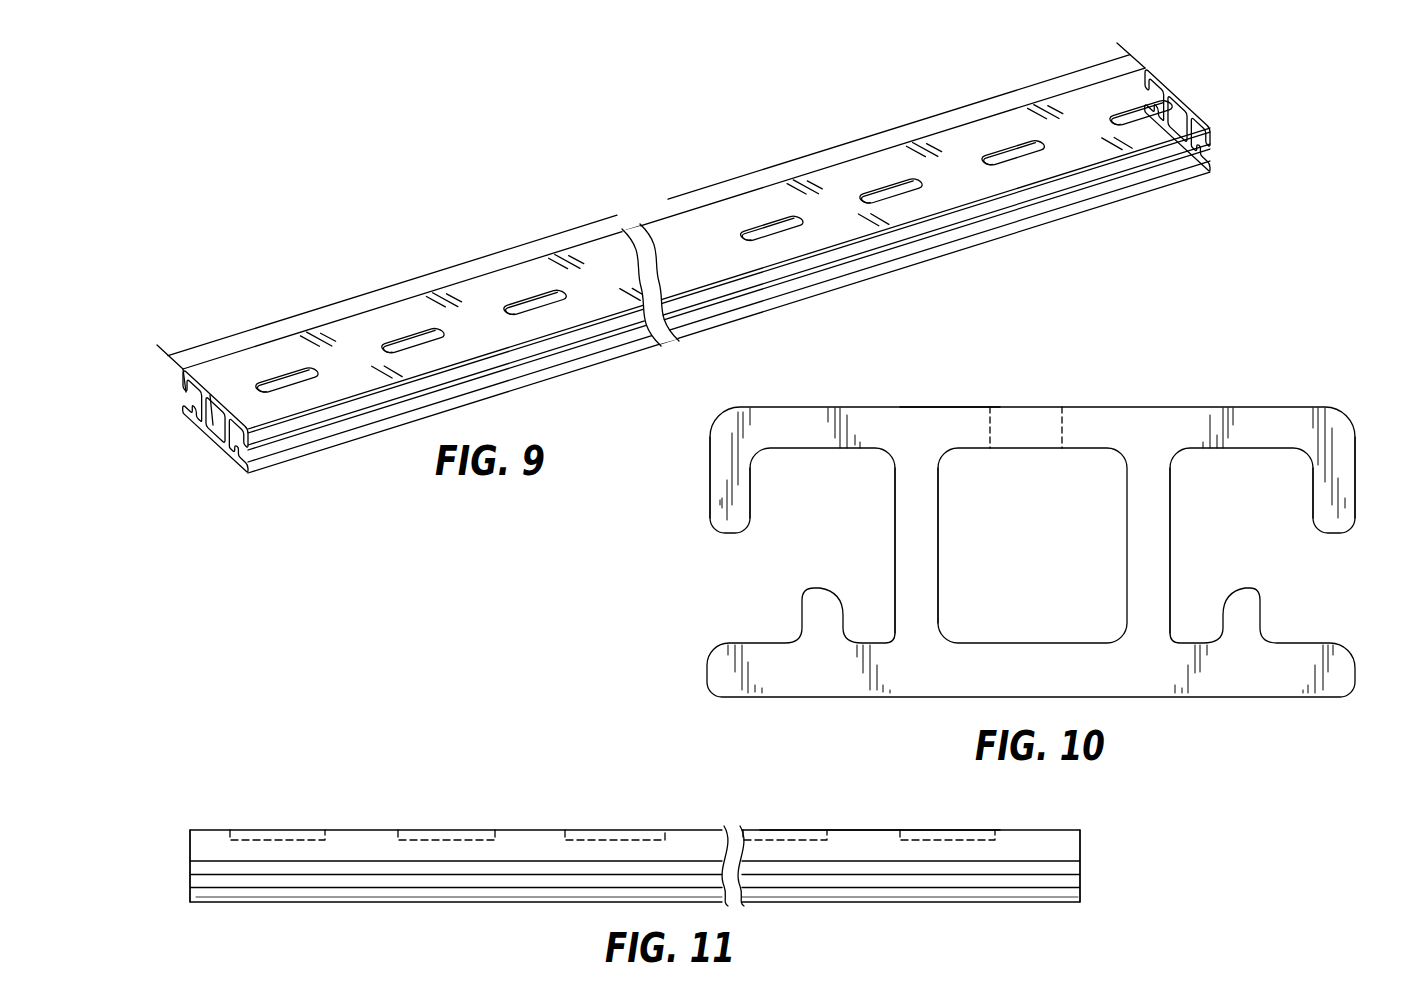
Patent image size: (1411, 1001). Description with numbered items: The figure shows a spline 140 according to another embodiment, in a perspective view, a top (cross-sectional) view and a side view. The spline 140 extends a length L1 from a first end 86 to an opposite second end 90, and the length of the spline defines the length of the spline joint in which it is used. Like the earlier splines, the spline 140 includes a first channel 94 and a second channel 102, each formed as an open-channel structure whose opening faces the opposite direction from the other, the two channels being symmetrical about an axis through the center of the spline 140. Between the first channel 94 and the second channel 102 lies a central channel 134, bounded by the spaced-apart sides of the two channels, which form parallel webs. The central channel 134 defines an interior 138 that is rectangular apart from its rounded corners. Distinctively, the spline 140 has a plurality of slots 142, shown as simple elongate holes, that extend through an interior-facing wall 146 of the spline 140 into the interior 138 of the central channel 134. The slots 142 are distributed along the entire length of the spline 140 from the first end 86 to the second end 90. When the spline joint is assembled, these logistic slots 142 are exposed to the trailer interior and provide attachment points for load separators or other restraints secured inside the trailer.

In FIG. 9, the first end 86 is at (205, 327).
In FIG. 11, the first end 86 is at (165, 845).
In FIG. 9, the second end 90 is at (1188, 72).
In FIG. 11, the second end 90 is at (1108, 852).
In FIG. 9, the first channel 94 is at (172, 388).
In FIG. 10, the first channel 94 is at (732, 445).
In FIG. 9, the second channel 102 is at (258, 487).
In FIG. 10, the second channel 102 is at (1328, 440).
In FIG. 9, the central channel 134 is at (212, 426).
In FIG. 10, the central channel 134 is at (942, 582).
In FIG. 10, the interior 138 is at (1115, 452).
In FIG. 9, the spline 140 is at (691, 305).
In FIG. 10, the spline 140 is at (1078, 381).
In FIG. 11, the spline 140 is at (298, 797).
In FIG. 9, the slots 142 is at (540, 302).
In FIG. 10, the slots 142 is at (992, 406).
In FIG. 11, the slots 142 is at (420, 829).
In FIG. 9, the interior-facing wall 146 is at (960, 178).
In FIG. 10, the interior-facing wall 146 is at (943, 405).
In FIG. 11, the interior-facing wall 146 is at (870, 828).